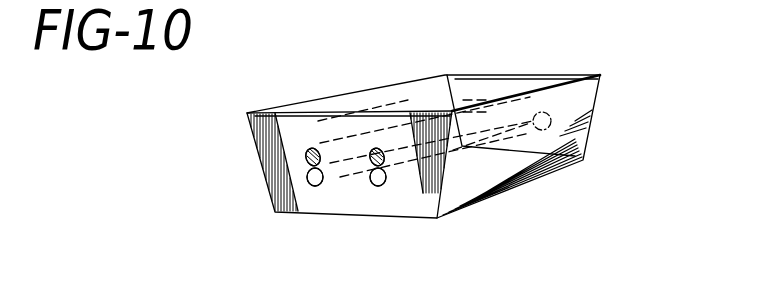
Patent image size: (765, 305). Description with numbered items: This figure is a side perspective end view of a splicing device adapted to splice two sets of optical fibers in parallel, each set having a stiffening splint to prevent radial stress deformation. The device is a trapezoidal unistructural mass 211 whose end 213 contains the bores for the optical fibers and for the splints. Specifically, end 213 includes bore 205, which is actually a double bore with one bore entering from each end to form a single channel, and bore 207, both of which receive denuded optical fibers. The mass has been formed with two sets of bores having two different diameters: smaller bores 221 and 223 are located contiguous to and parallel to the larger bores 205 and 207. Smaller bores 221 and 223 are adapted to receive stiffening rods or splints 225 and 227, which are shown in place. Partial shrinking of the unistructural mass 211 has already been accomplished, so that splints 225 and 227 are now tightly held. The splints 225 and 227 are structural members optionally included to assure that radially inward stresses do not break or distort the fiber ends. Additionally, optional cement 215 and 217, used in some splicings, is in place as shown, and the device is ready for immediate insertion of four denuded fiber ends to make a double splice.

The trapezoidal unistructural mass 211 is at (558, 80).
The end 213 is at (278, 123).
The bore 223 is at (306, 150).
The splint 227 is at (307, 160).
The cement 217 is at (306, 176).
The bore 207 is at (308, 188).
The bore 221 is at (373, 148).
The splint 225 is at (367, 168).
The cement 215 is at (374, 186).
The bore 205 is at (383, 190).